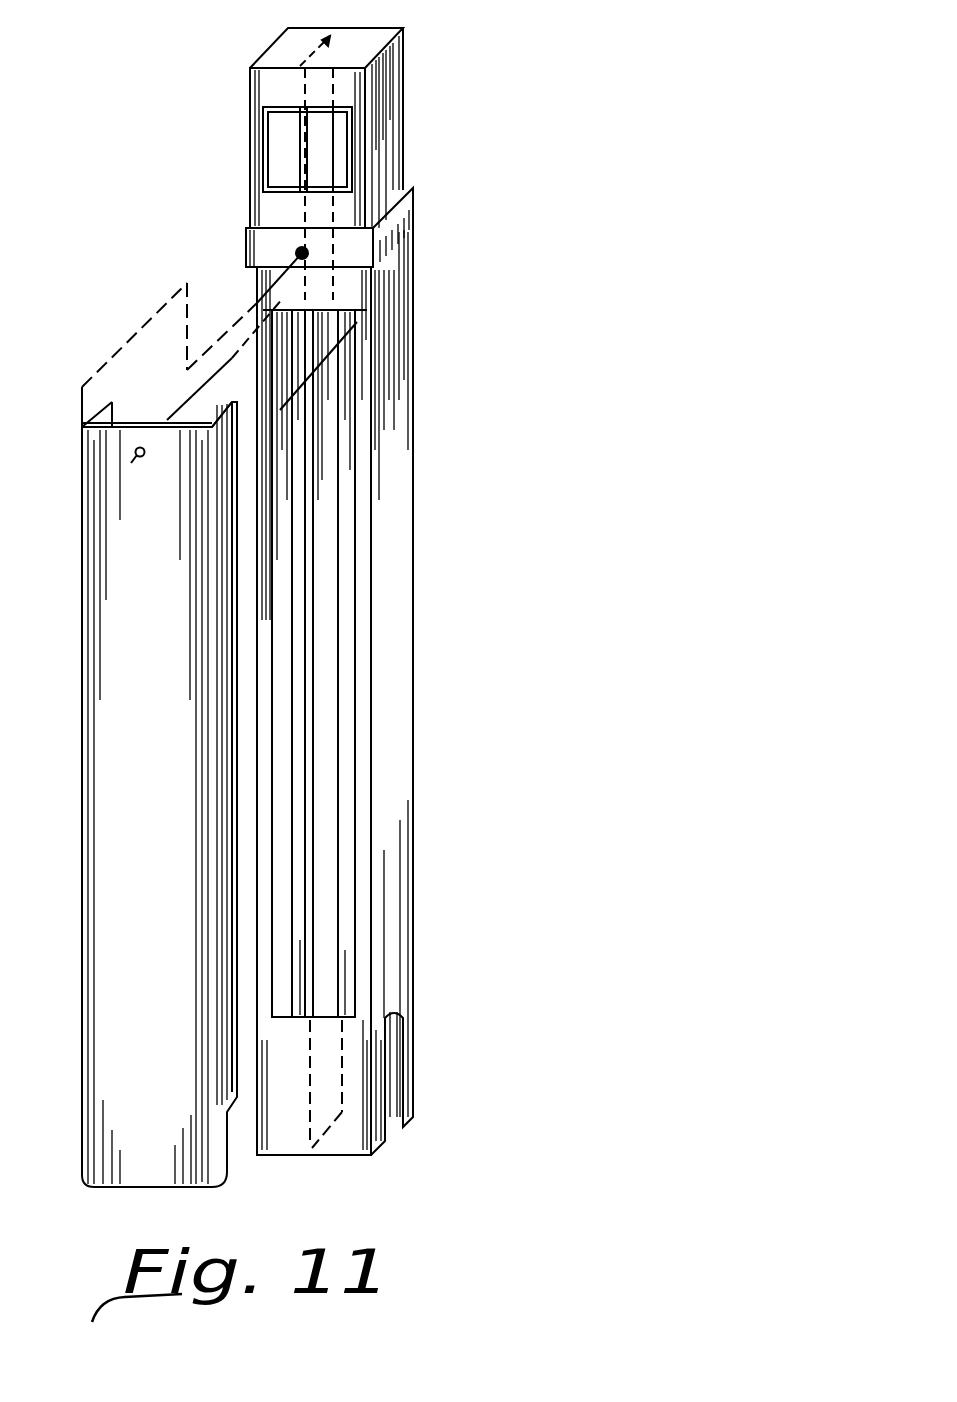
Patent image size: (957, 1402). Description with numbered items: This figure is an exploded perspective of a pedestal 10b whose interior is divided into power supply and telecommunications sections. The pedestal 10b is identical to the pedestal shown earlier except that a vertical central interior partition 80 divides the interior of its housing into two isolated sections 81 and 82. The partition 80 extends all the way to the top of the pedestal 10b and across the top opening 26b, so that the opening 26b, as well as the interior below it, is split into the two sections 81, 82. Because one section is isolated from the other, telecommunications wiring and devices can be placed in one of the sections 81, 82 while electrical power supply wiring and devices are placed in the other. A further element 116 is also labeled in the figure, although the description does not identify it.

The opening 26b is at (252, 163).
The isolated section 82 is at (342, 367).
The isolated section 81 is at (280, 414).
The pedestal 10b is at (416, 495).
The post side wall 116 is at (390, 573).
The vertical central interior partition 80 is at (322, 657).